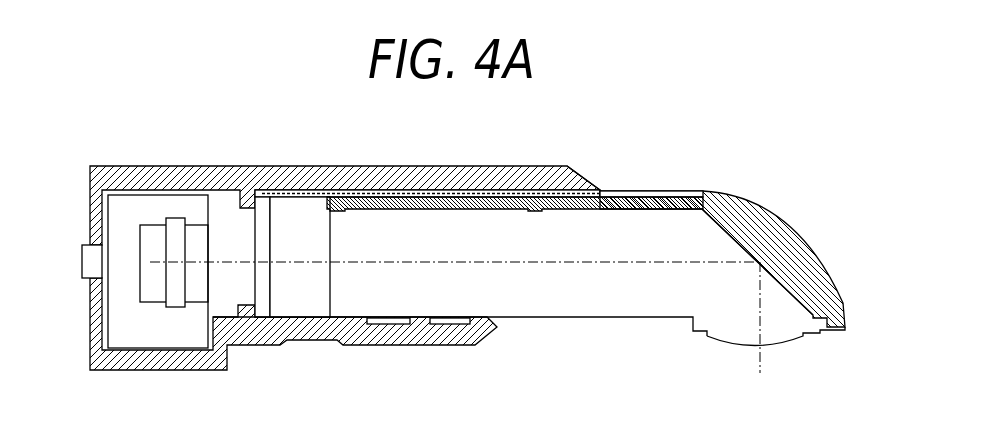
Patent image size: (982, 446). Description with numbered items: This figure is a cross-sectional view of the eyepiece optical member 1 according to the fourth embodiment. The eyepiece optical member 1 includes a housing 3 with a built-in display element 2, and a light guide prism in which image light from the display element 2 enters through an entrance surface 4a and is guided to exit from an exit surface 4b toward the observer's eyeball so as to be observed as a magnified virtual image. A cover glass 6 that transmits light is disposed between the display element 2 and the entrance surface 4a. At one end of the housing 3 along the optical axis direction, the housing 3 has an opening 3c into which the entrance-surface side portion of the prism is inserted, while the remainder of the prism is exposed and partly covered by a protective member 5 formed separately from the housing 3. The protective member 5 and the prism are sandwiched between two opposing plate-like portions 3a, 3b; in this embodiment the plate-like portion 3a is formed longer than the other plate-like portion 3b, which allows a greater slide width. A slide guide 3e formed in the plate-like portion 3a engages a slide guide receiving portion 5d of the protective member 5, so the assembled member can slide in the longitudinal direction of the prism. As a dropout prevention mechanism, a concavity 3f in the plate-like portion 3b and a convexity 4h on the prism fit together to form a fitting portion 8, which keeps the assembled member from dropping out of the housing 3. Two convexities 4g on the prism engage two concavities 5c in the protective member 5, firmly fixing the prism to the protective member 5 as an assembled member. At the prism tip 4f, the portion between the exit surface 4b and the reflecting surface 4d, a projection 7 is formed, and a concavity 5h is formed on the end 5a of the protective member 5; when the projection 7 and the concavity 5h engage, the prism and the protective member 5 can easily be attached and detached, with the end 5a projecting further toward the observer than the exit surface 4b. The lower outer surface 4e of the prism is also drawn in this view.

The eyepiece optical member 1 is at (562, 127).
The display element 2 is at (100, 262).
The housing 3 is at (210, 165).
The plate-like portion 3a is at (480, 166).
The plate-like portion 3b is at (318, 342).
The opening 3c is at (603, 187).
The slide guide 3e is at (302, 190).
The concavity 3f is at (382, 318).
The entrance surface 4a is at (330, 245).
The exit surface 4b is at (737, 343).
The reflecting surface 4d is at (752, 247).
The lower outer surface of frame 4e is at (610, 318).
The prism tip 4f is at (832, 333).
The convexity 4g is at (353, 210).
The convexity 4h is at (416, 318).
The protective member 5 is at (743, 203).
The end 5a is at (835, 289).
The concavity 5c is at (537, 211).
The slide guide receiving portion 5d is at (648, 192).
The concavity 5h is at (829, 316).
The cover glass 6 is at (262, 247).
The projection 7 is at (803, 320).
The fitting portion 8 is at (423, 330).